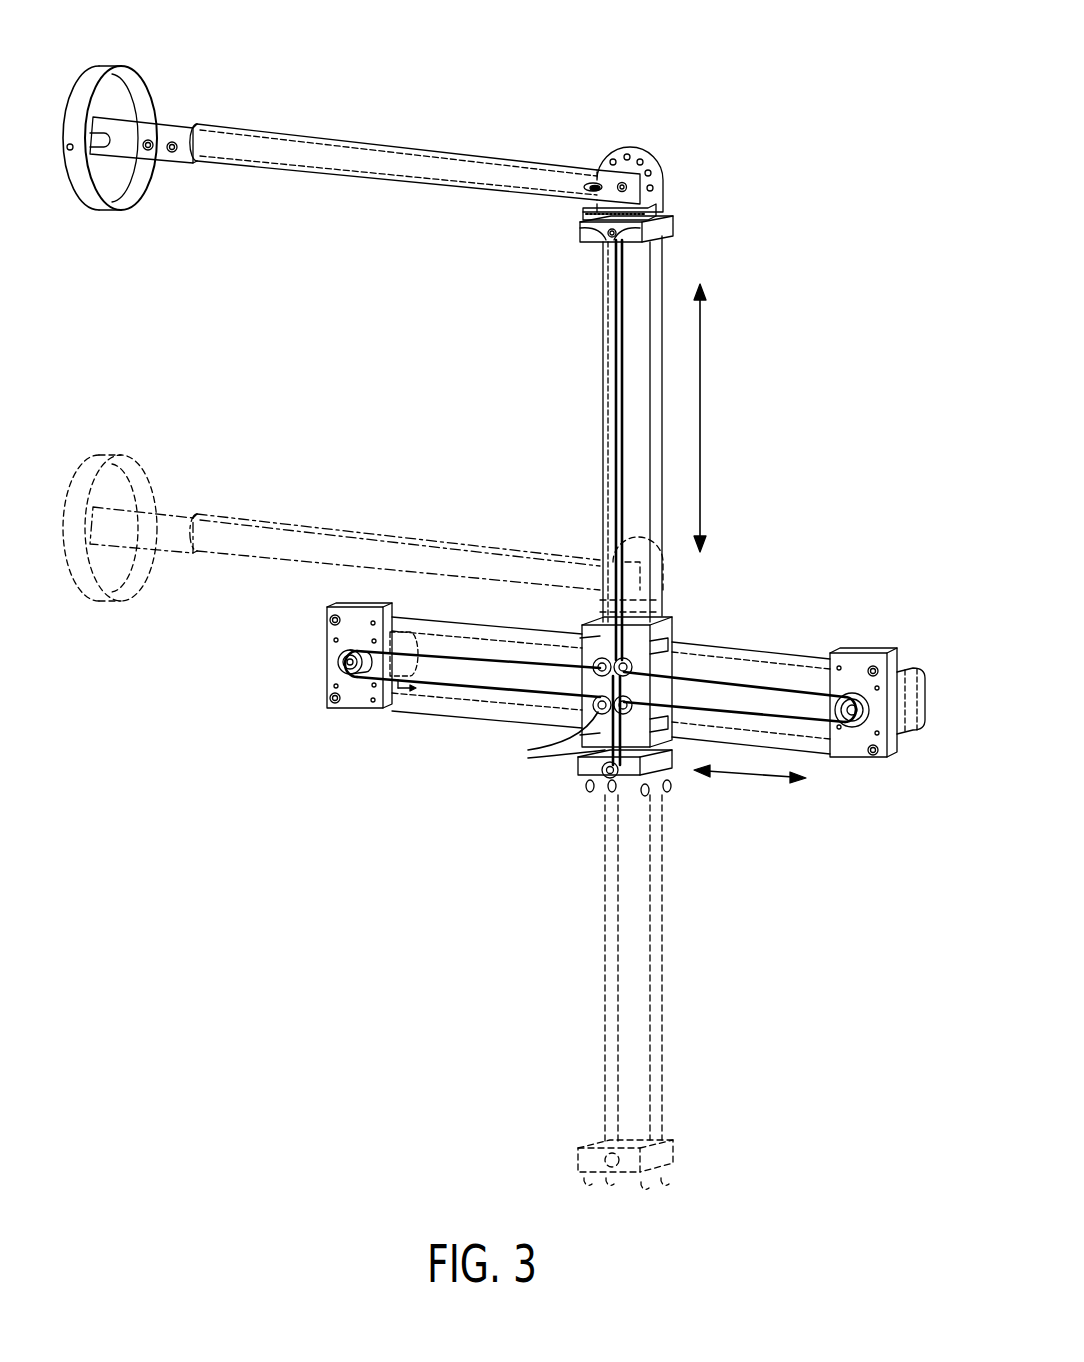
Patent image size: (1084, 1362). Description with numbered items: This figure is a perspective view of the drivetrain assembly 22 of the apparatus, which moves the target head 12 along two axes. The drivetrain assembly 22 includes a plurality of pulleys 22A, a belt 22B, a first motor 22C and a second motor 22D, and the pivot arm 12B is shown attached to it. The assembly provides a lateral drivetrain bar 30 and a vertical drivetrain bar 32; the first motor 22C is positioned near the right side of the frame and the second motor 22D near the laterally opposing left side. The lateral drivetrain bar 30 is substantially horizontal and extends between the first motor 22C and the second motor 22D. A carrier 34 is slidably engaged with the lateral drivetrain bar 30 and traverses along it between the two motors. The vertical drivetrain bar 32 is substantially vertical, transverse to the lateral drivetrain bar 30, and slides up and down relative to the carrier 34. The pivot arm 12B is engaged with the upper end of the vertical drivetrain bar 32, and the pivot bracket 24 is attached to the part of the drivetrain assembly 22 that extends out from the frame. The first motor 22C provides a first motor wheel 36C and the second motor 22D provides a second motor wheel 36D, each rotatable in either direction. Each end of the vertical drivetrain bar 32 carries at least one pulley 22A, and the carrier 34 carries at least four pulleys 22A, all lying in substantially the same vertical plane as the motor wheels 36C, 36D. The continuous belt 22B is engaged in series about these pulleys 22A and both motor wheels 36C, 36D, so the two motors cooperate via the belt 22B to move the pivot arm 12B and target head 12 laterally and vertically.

The target head 12 is at (78, 96).
The pivot arm 12B is at (281, 162).
The drivetrain assembly 22 is at (827, 313).
The pulleys 22A is at (544, 743).
The belt 22B is at (603, 500).
The first motor 22C is at (410, 648).
The second motor 22D is at (913, 701).
The pivot bracket 24 is at (650, 164).
The lateral drivetrain bar 30 is at (420, 712).
The vertical drivetrain bar 32 is at (661, 265).
The carrier 34 is at (673, 622).
The first motor wheel 36C is at (347, 664).
The second motor wheel 36D is at (860, 693).